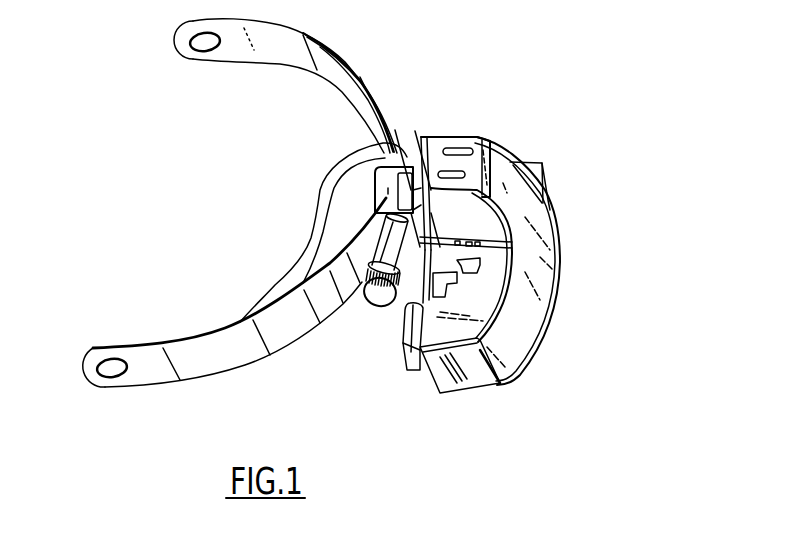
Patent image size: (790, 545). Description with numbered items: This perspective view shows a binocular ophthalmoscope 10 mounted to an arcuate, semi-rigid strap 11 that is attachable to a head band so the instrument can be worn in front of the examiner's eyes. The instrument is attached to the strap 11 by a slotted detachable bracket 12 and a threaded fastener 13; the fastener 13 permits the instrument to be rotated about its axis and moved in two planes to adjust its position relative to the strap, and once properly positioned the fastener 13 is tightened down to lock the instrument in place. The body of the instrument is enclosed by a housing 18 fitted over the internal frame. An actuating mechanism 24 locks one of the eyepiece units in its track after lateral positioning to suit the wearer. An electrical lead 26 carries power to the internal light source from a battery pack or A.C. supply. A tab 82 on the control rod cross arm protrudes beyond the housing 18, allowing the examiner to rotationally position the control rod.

The binocular ophthalmoscope 10 is at (483, 257).
The arcuate shaped semi-rigid strap 11 is at (338, 52).
The slotted detachable bracket 12 is at (386, 166).
The threaded fastener 13 is at (380, 298).
The housing 18 is at (500, 143).
The actuating mechanism 24 is at (410, 354).
The electrical lead 26 is at (322, 203).
The tab 82 is at (473, 280).